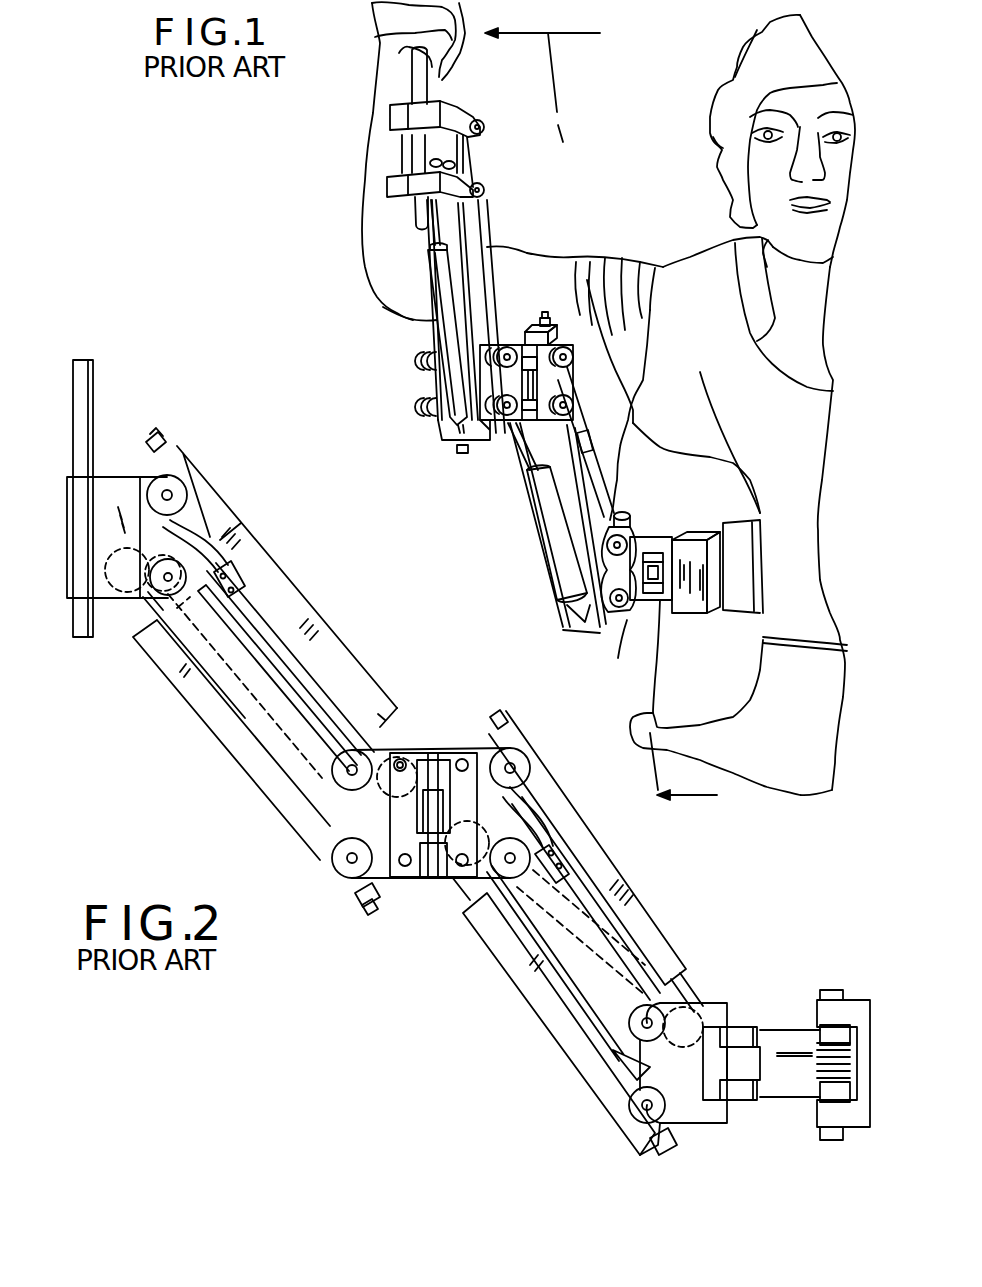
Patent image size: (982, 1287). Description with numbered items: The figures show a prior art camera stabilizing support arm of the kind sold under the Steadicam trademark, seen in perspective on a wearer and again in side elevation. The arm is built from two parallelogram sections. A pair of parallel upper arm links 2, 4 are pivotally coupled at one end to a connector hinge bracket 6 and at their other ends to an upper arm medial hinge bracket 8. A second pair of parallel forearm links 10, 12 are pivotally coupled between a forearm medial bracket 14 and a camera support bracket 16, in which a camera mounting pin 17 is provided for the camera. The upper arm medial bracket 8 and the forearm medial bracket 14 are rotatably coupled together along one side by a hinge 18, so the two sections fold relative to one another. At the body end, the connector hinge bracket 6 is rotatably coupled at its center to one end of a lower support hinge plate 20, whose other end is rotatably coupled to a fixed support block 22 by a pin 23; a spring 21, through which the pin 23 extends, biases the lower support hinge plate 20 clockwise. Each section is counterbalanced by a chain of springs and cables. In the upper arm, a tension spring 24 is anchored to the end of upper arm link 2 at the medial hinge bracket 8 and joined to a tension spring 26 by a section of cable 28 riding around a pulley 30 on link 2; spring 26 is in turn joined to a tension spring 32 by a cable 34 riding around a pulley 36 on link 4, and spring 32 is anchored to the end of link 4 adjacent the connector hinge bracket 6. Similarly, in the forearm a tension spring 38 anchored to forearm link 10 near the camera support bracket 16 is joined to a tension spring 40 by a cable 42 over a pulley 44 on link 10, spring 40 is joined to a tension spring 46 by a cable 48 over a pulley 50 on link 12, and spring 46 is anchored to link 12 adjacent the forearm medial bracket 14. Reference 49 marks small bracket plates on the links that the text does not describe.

In FIG. 1, the upper arm link 2 is at (530, 597).
In FIG. 2, the upper arm link 2 is at (573, 870).
In FIG. 1, the upper arm link 4 is at (570, 493).
In FIG. 2, the upper arm link 4 is at (537, 933).
In FIG. 1, the connector hinge bracket 6 is at (613, 482).
In FIG. 2, the connector hinge bracket 6 is at (698, 1113).
In FIG. 1, the upper arm medial hinge bracket 8 is at (575, 328).
In FIG. 2, the upper arm medial hinge bracket 8 is at (460, 747).
In FIG. 1, the forearm link 10 is at (483, 253).
In FIG. 2, the forearm link 10 is at (250, 597).
In FIG. 1, the forearm link 12 is at (453, 235).
In FIG. 2, the forearm link 12 is at (217, 740).
In FIG. 1, the forearm medial bracket 14 is at (497, 435).
In FIG. 2, the forearm medial bracket 14 is at (383, 865).
In FIG. 1, the camera support bracket 16 is at (455, 114).
In FIG. 2, the camera support bracket 16 is at (110, 483).
In FIG. 2, the camera mounting pin 17 is at (93, 372).
In FIG. 2, the hinge 18 is at (405, 758).
In FIG. 1, the lower support hinge plate 20 is at (626, 602).
In FIG. 2, the lower support hinge plate 20 is at (775, 1033).
In FIG. 2, the spring 21 is at (813, 1087).
In FIG. 1, the fixed support block 22 is at (660, 593).
In FIG. 2, the fixed support block 22 is at (863, 1010).
In FIG. 2, the pin 23 is at (830, 997).
In FIG. 2, the tension spring 24 is at (560, 793).
In FIG. 2, the tension spring 26 is at (633, 947).
In FIG. 2, the cable 28 is at (693, 1000).
In FIG. 2, the pulley 30 is at (703, 1010).
In FIG. 1, the tension spring 32 is at (560, 547).
In FIG. 2, the tension spring 32 is at (577, 1033).
In FIG. 2, the cable 34 is at (463, 900).
In FIG. 2, the pulley 36 is at (450, 878).
In FIG. 2, the tension spring 38 is at (210, 500).
In FIG. 2, the tension spring 40 is at (313, 677).
In FIG. 2, the cable 42 is at (393, 745).
In FIG. 2, the pulley 44 is at (373, 780).
In FIG. 1, the tension spring 46 is at (440, 307).
In FIG. 2, the tension spring 46 is at (177, 683).
In FIG. 2, the cable 48 is at (133, 617).
In FIG. 1, the bracket plate 49 is at (476, 226).
In FIG. 2, the bracket plate 49 is at (233, 573).
In FIG. 2, the pulley 50 is at (108, 575).